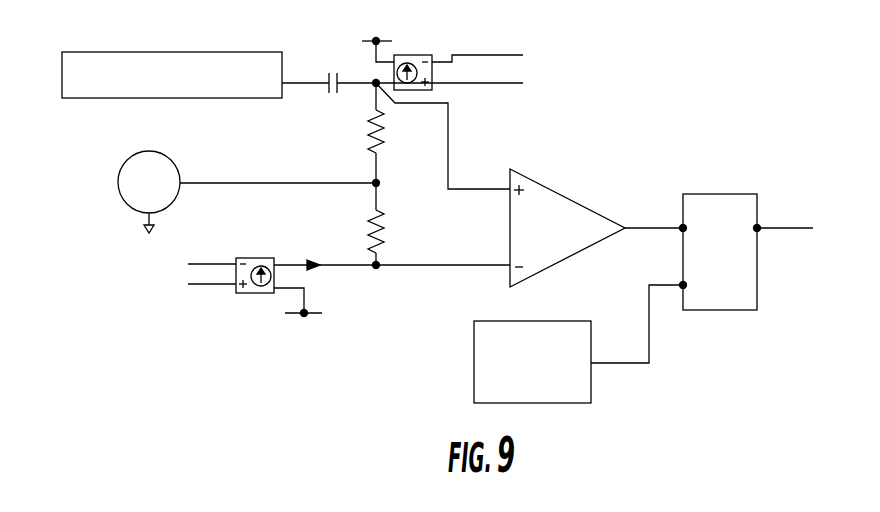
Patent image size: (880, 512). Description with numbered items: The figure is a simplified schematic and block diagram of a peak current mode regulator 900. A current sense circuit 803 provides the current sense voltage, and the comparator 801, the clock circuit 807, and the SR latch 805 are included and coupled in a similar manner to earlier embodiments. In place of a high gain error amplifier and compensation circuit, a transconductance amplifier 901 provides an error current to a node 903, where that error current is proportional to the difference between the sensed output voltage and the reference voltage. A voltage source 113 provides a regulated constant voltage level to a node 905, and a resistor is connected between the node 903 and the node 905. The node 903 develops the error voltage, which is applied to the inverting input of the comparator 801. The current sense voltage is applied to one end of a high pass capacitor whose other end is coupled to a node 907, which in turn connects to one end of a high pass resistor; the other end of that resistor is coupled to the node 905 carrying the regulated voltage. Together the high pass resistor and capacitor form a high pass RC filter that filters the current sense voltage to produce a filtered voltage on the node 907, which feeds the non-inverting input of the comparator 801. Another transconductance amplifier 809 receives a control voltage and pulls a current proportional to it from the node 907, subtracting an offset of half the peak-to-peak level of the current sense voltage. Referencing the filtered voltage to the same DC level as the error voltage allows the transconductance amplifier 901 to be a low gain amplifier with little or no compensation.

The peak current mode regulator 900 is at (740, 363).
The current sense circuit 803 is at (187, 83).
The transconductance amplifier 809 is at (420, 55).
The node 907 is at (448, 130).
The node 905 is at (378, 181).
The voltage source 113 is at (164, 194).
The transconductance amplifier 901 is at (250, 257).
The node 903 is at (377, 267).
The comparator 801 is at (557, 241).
The SR latch 805 is at (727, 194).
The clock circuit 807 is at (548, 387).